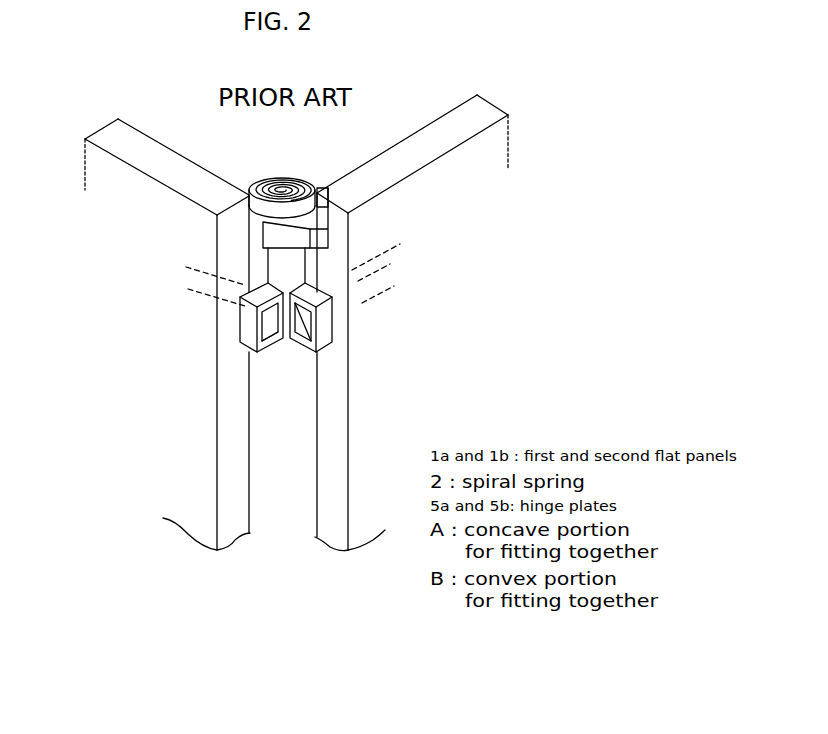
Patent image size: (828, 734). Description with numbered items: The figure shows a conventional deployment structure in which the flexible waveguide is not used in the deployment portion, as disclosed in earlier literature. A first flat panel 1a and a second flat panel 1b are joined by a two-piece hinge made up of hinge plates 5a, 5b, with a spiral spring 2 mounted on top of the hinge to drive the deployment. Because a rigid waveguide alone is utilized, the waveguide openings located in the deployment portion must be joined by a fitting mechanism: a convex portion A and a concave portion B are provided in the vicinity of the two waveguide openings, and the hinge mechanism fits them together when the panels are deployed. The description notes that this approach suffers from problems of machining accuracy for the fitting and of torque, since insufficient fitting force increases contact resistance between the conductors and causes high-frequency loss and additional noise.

The first flat panel 1a is at (190, 520).
The second flat panel 1b is at (370, 527).
The spiral spring 2 is at (287, 177).
The hinge plate 5a is at (240, 213).
The hinge plate 5b is at (337, 210).
The convex portion A is at (302, 345).
The concave portion B is at (273, 347).